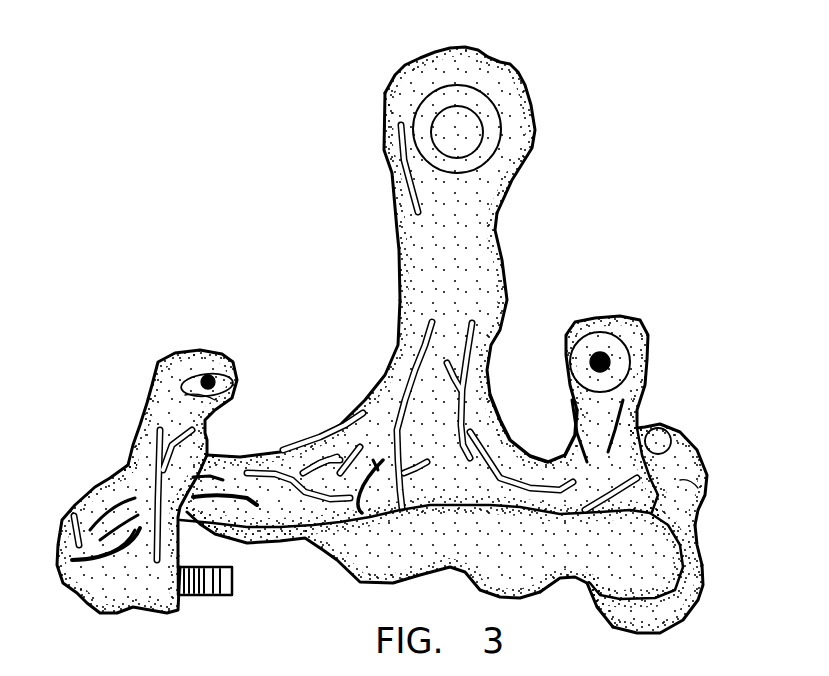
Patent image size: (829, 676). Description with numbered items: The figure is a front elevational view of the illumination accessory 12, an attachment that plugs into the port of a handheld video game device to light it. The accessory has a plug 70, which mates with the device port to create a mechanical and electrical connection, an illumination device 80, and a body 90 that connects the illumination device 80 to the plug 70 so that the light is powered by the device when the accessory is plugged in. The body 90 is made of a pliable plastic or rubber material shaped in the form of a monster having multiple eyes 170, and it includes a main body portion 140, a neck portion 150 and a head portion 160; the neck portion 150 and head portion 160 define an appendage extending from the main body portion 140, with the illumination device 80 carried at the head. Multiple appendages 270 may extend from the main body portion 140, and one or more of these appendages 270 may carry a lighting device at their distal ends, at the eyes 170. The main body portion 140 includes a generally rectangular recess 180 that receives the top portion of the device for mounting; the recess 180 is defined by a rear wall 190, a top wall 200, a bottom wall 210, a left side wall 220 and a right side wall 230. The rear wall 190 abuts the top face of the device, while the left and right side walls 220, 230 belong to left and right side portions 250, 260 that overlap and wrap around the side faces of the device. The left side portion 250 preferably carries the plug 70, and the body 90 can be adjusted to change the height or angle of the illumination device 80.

The illumination accessory 12 is at (635, 146).
The plug 70 is at (233, 584).
The illumination device 80 is at (413, 103).
The body 90 is at (352, 387).
The main body portion 140 is at (529, 404).
The neck portion 150 is at (507, 222).
The head portion 160 is at (529, 66).
The eyes 170 is at (593, 355).
The recess 180 is at (640, 565).
The rear wall 190 is at (457, 537).
The top wall 200 is at (700, 552).
The bottom wall 210 is at (577, 578).
The left side wall 220 is at (213, 535).
The right side wall 230 is at (630, 598).
The left side portion 250 is at (58, 522).
The right side portion 260 is at (702, 595).
The appendages 270 is at (640, 322).